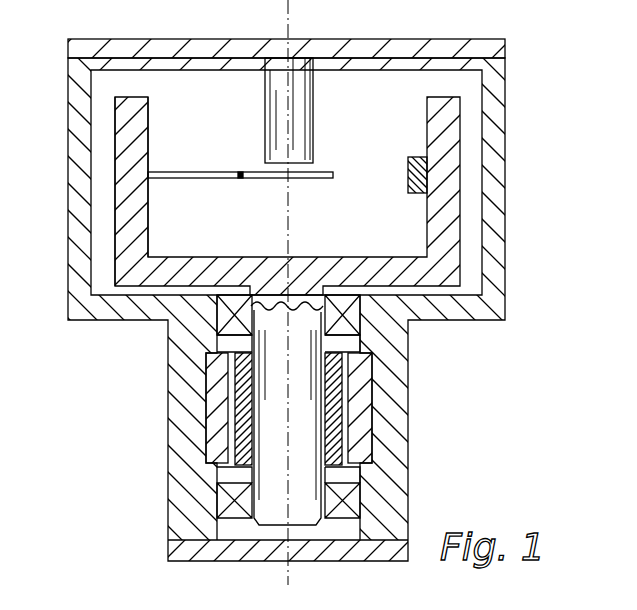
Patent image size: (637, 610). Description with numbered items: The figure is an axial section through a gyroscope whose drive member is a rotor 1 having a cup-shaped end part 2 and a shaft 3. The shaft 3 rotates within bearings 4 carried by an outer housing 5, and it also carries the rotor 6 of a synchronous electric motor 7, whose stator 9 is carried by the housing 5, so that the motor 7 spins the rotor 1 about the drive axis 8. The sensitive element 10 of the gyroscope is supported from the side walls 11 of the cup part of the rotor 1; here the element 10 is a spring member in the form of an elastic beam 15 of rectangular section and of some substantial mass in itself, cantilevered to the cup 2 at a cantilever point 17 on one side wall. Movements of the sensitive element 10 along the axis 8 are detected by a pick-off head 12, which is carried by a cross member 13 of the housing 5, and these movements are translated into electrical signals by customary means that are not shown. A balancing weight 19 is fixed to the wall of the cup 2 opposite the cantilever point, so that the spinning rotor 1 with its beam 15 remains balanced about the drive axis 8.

The rotor 1 is at (468, 142).
The cup-shaped end part 2 is at (127, 188).
The shaft 3 is at (273, 438).
The bearings 4 is at (338, 302).
The outer housing 5 is at (72, 122).
The rotor of synchronous electric motor 6 is at (243, 377).
The synchronous electric motor 7 is at (382, 387).
The drive axis 8 is at (290, 238).
The stator 9 is at (213, 410).
The sensitive element 10 is at (202, 155).
The side walls 11 is at (148, 226).
The pick-off head 12 is at (298, 140).
The cross member 13 is at (375, 47).
The elastic beam 15 is at (278, 183).
The sample point 17 is at (240, 178).
The balancing weight 19 is at (408, 162).